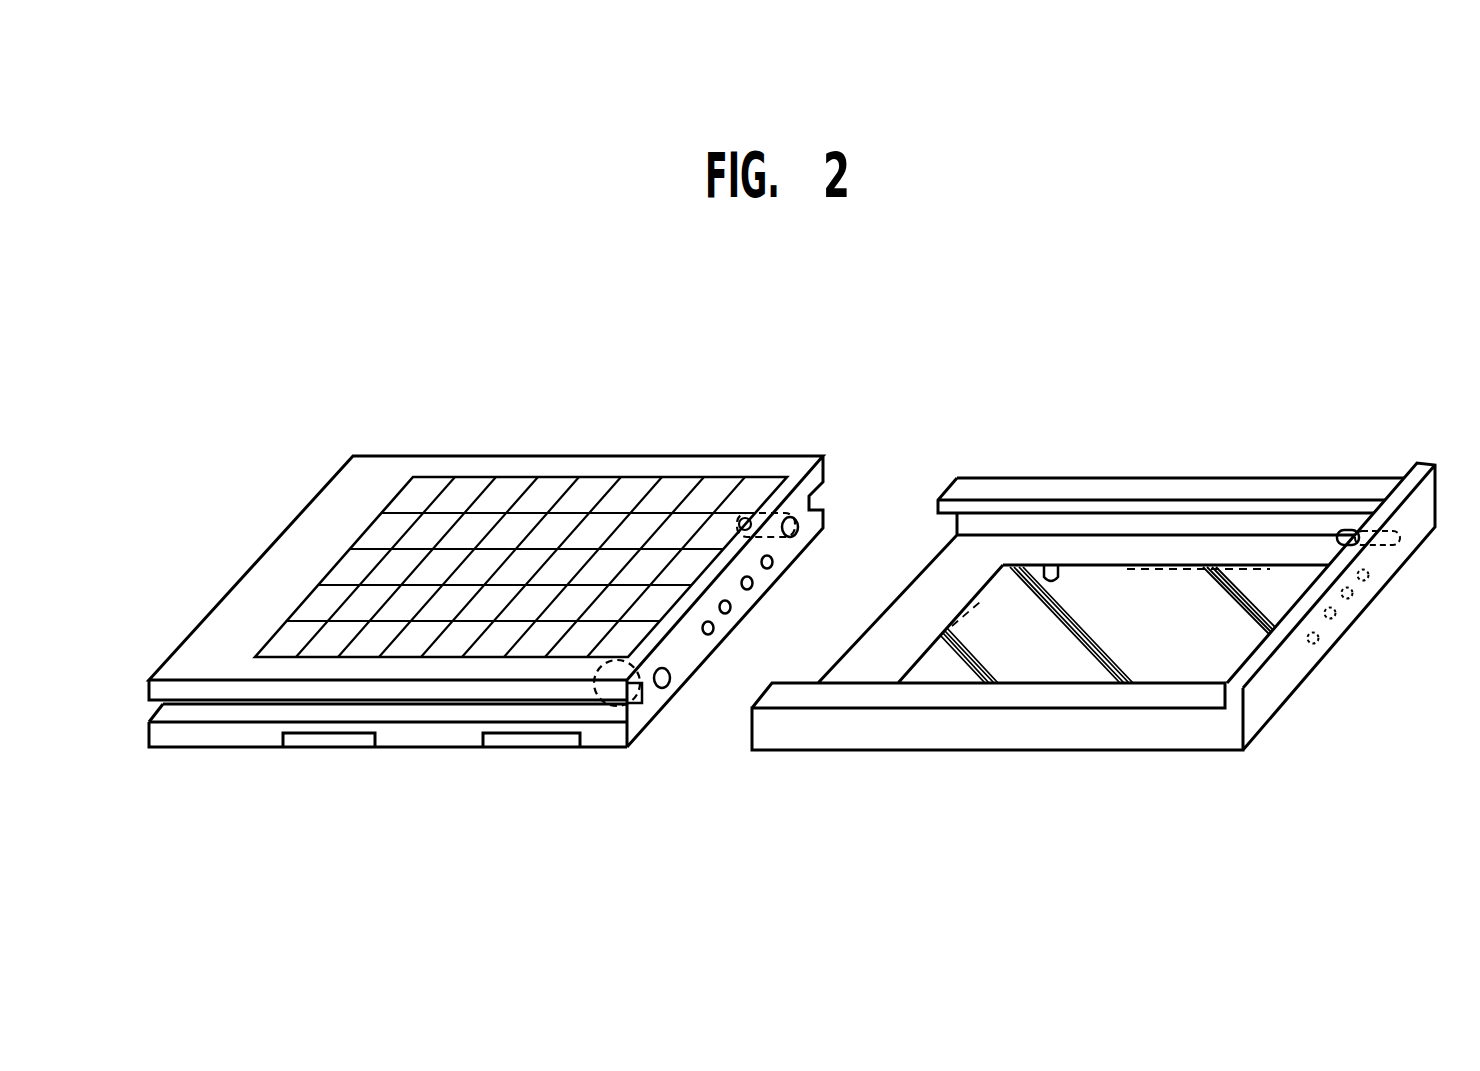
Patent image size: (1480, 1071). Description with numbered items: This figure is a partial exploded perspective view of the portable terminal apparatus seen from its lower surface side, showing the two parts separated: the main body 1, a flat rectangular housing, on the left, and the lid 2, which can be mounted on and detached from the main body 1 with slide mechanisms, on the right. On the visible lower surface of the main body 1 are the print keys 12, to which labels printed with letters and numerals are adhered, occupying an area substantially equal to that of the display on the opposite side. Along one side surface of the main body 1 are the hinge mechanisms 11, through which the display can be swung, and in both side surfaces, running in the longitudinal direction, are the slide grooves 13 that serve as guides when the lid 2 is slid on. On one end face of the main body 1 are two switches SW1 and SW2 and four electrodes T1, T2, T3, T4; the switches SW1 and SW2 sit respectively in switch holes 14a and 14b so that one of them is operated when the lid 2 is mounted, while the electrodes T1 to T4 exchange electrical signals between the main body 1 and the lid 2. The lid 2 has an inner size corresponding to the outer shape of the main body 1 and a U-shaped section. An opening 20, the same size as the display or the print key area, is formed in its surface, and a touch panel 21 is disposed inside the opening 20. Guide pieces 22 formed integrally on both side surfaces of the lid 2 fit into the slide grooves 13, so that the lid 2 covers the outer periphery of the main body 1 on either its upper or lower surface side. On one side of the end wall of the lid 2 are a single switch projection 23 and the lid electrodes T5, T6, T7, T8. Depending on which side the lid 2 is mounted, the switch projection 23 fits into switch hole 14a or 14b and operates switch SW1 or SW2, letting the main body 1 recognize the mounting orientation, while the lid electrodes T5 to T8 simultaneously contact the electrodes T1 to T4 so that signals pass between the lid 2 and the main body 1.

The main body 1 is at (383, 472).
The lid 2 is at (1192, 735).
The hinge mechanisms 11 is at (317, 743).
The print keys 12 is at (578, 497).
The slide grooves 13 is at (455, 713).
The switch hole 14a is at (822, 513).
The switch hole 14b is at (665, 688).
The switch SW1 is at (758, 513).
The switch SW2 is at (596, 705).
The electrode T1 is at (776, 558).
The electrode T2 is at (755, 582).
The electrode T3 is at (733, 606).
The electrode T4 is at (716, 632).
The opening 20 is at (1047, 572).
The touch panel 21 is at (1073, 603).
The guide pieces 22 is at (1160, 507).
The switch projection 23 is at (1343, 527).
The lid electrode T5 is at (1370, 577).
The lid electrode T6 is at (1353, 597).
The lid electrode T7 is at (1337, 617).
The lid electrode T8 is at (1320, 645).